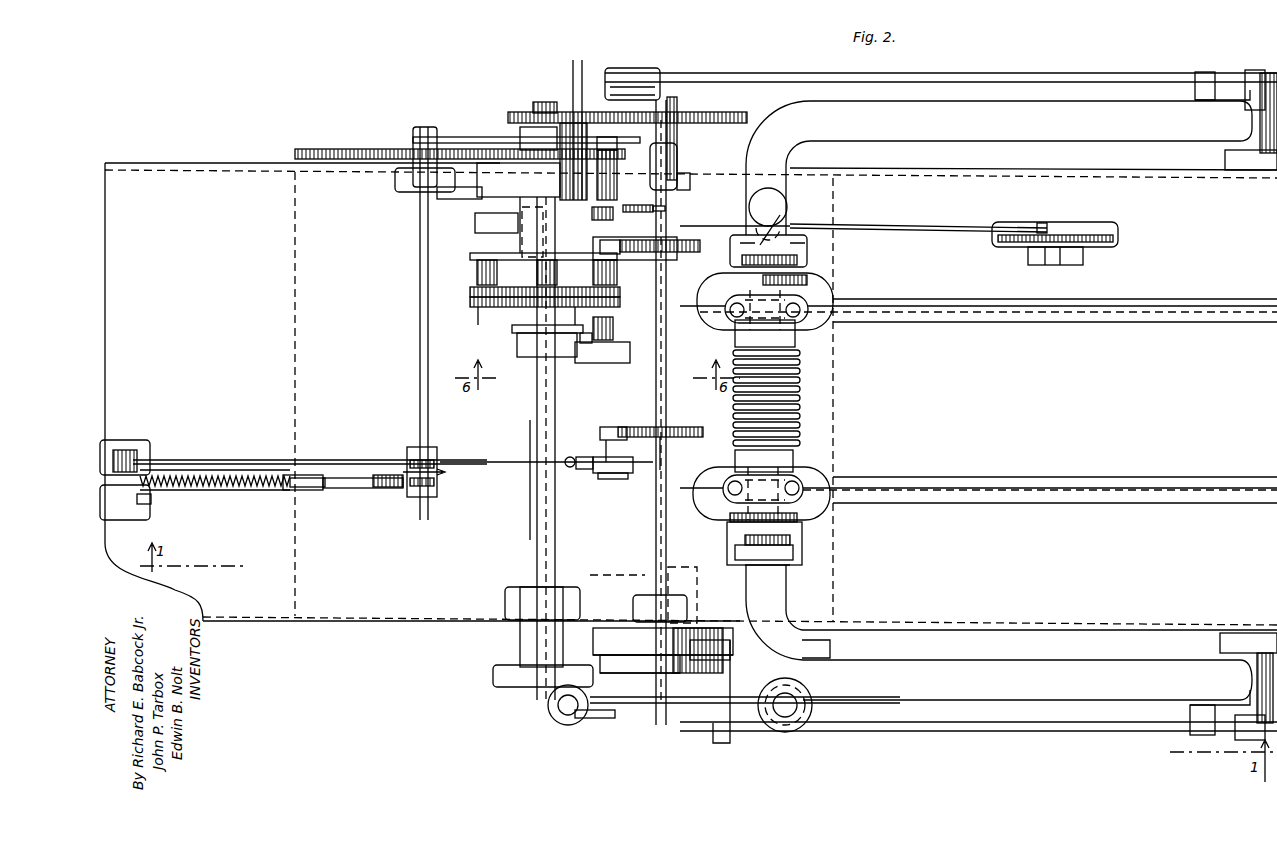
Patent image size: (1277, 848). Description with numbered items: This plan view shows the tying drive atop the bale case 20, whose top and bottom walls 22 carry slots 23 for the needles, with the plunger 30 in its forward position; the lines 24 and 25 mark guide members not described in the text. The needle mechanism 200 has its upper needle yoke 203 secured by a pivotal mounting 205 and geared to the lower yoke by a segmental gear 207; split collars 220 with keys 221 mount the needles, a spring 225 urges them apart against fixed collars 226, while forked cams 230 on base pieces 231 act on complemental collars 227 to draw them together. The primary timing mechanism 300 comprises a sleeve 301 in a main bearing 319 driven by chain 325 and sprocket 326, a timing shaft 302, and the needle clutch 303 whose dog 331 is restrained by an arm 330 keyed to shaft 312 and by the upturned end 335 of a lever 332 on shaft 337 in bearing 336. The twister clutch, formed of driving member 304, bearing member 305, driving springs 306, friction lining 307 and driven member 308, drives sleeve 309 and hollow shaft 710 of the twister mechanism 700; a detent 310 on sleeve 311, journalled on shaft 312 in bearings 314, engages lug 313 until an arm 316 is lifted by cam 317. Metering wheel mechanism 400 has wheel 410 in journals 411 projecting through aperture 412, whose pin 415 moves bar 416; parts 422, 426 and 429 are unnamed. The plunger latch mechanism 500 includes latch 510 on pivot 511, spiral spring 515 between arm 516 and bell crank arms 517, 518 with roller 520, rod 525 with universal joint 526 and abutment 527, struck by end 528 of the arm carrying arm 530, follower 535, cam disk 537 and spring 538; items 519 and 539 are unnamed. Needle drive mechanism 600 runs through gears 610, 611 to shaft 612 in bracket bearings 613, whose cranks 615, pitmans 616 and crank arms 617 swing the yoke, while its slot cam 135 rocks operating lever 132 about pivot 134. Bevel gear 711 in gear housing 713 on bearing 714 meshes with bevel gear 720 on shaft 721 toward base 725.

The bale case 20 is at (236, 162).
The top and bottom walls 22 is at (960, 385).
The slots 23 is at (1012, 334).
The bearing housing 24 is at (833, 288).
The lower guide rail 25 is at (1058, 477).
The plunger 30 is at (295, 287).
The operating lever 132 is at (730, 745).
The pivot 134 is at (775, 720).
The slot cam 135 is at (702, 640).
The needle mechanism 200 is at (1006, 402).
The upper needle yoke 203 is at (999, 400).
The pivotal mounting 205 is at (1258, 70).
The segmental gear 207 is at (1225, 158).
The split collars 220 is at (810, 280).
The keys 221 is at (785, 262).
The spring 225 is at (800, 395).
The collars 226 is at (775, 250).
The complemental collars 227 is at (790, 540).
The forked cams 230 is at (793, 552).
The base pieces 231 is at (790, 565).
The primary timing mechanism 300 is at (520, 238).
The sleeve 301 is at (520, 209).
The timing shaft 302 is at (497, 160).
The needle clutch 303 is at (437, 197).
The driving member 304 is at (470, 258).
The bearing member 305 is at (470, 290).
The driving springs 306 is at (477, 273).
The brake friction lining 307 is at (470, 301).
The driven member 308 is at (478, 308).
The sleeve 309 is at (517, 341).
The detent 310 is at (667, 318).
The sleeve 311 is at (618, 256).
The shaft 312 is at (622, 108).
The lug 313 is at (614, 325).
The bearings 314 is at (617, 160).
The arm 316 is at (668, 259).
The cam 317 is at (700, 247).
The main bearing 319 is at (475, 222).
The chain 325 is at (326, 140).
The sprocket 326 is at (480, 150).
The arm 330 is at (580, 122).
The dog 331 is at (528, 126).
The lever 332 is at (483, 136).
The upturned end 335 is at (545, 100).
The bearing 336 is at (405, 168).
The shaft 337 is at (420, 233).
The metering wheel mechanism 400 is at (801, 235).
The metering wheel 410 is at (1093, 234).
The journals 411 is at (1065, 262).
The aperture 412 is at (1118, 232).
The pin 415 is at (1050, 213).
The bar 416 is at (905, 223).
The rack 422 is at (665, 208).
The block 426 is at (645, 228).
The block 429 is at (582, 362).
The plunger latch mechanism 500 is at (295, 496).
The latch 510 is at (216, 474).
The rearward pivot 511 is at (150, 500).
The spiral spring 515 is at (285, 474).
The arm 516 is at (112, 520).
The bell crank arm 517 is at (445, 472).
The bell crank arm 518 is at (382, 474).
The tube 519 is at (246, 490).
The roller 520 is at (348, 490).
The rod 525 is at (306, 458).
The universal joint 526 is at (126, 450).
The abutment 527 is at (600, 480).
The upper end 528 is at (606, 475).
The arm 530 is at (625, 427).
The cam follower 535 is at (676, 427).
The cam disk 537 is at (692, 427).
The spiral spring 538 is at (585, 470).
The roller 539 is at (571, 456).
The needle drive mechanism 600 is at (661, 399).
The gear 610 is at (578, 110).
The gear 611 is at (680, 106).
The shaft 612 is at (667, 344).
The bracket bearings 613 is at (680, 170).
The cranks 615 is at (637, 87).
The pitmans 616 is at (812, 72).
The crank arms 617 is at (1222, 75).
The twister mechanism 700 is at (697, 472).
The hollow shaft 710 is at (527, 551).
The beveled drive gear 711 is at (493, 677).
The gear housing 713 is at (520, 640).
The bearing 714 is at (505, 602).
The bevel gear 720 is at (550, 715).
The shaft 721 is at (580, 720).
The base 725 is at (820, 652).